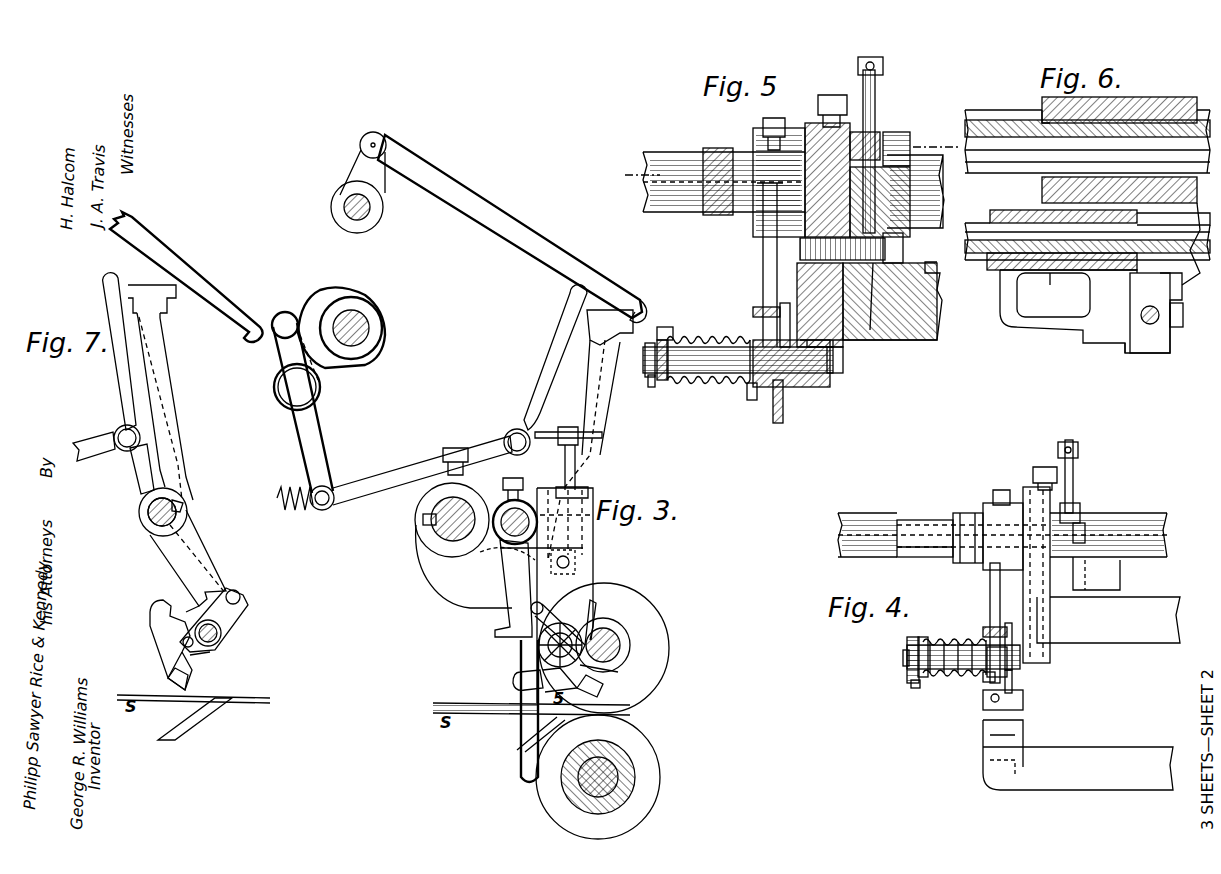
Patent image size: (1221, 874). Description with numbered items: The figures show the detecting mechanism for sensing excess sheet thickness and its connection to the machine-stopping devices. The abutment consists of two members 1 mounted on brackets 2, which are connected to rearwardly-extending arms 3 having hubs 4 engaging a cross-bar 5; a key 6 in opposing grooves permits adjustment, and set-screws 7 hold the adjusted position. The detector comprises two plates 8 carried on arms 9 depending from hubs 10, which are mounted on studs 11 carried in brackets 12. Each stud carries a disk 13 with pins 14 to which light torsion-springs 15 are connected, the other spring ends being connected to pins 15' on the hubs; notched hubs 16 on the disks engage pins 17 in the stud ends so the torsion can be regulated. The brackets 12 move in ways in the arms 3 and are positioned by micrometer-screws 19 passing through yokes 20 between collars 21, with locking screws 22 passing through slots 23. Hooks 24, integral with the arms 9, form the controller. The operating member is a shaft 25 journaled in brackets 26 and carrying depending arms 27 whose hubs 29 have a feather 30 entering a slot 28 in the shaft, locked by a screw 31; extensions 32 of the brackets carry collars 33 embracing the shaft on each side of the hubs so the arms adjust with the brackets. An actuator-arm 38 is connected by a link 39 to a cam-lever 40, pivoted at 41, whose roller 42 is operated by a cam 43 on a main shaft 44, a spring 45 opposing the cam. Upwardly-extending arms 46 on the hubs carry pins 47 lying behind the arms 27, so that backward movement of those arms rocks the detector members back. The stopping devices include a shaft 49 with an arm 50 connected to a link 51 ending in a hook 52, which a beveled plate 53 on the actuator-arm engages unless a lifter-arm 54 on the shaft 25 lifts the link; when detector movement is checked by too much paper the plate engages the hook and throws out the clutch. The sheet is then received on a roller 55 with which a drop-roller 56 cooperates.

In FIG. 7, the abutment members 1 is at (190, 726).
In FIG. 3, the abutment members 1 is at (520, 728).
In FIG. 4, the abutment members 1 is at (1023, 734).
In FIG. 3, the brackets 2 is at (518, 770).
In FIG. 5, the brackets 2 is at (930, 342).
In FIG. 6, the brackets 2 is at (1163, 344).
In FIG. 4, the brackets 2 is at (1081, 693).
In FIG. 3, the rearwardly-extending arms 3 is at (440, 585).
In FIG. 6, the rearwardly-extending arms 3 is at (1200, 268).
In FIG. 3, the hubs 4 is at (420, 502).
In FIG. 5, the hubs 4 is at (895, 140).
In FIG. 6, the hubs 4 is at (1173, 100).
In FIG. 4, the hubs 4 is at (985, 576).
In FIG. 3, the cross-bar 5 is at (407, 555).
In FIG. 5, the cross-bar 5 is at (793, 190).
In FIG. 6, the cross-bar 5 is at (1087, 141).
In FIG. 4, the cross-bar 5 is at (860, 516).
In FIG. 3, the key 6 is at (423, 519).
In FIG. 5, the key 6 is at (781, 156).
In FIG. 6, the key 6 is at (1042, 112).
In FIG. 3, the set-screws 7 is at (460, 440).
In FIG. 5, the set-screws 7 is at (832, 99).
In FIG. 4, the set-screws 7 is at (1038, 472).
In FIG. 7, the detector plates 8 is at (188, 683).
In FIG. 3, the detector plates 8 is at (603, 688).
In FIG. 4, the detector plates 8 is at (1023, 702).
In FIG. 7, the arms 9 is at (170, 660).
In FIG. 3, the arms 9 is at (560, 678).
In FIG. 5, the arms 9 is at (784, 412).
In FIG. 4, the arms 9 is at (1013, 683).
In FIG. 5, the hubs 10 is at (790, 385).
In FIG. 4, the hubs 10 is at (998, 661).
In FIG. 3, the studs 11 is at (540, 649).
In FIG. 5, the studs 11 is at (648, 356).
In FIG. 4, the studs 11 is at (907, 656).
In FIG. 5, the brackets 12 is at (803, 278).
In FIG. 6, the brackets 12 is at (1135, 313).
In FIG. 3, the disks 13 is at (620, 665).
In FIG. 5, the disks 13 is at (662, 382).
In FIG. 4, the disks 13 is at (915, 683).
In FIG. 5, the pins 14 is at (672, 330).
In FIG. 4, the pins 14 is at (925, 640).
In FIG. 7, the torsion-springs 15 is at (225, 650).
In FIG. 5, the torsion-springs 15 is at (708, 351).
In FIG. 4, the torsion-springs 15 is at (954, 665).
In FIG. 7, the pins 15' is at (160, 640).
In FIG. 5, the pins 15' is at (736, 393).
In FIG. 4, the pins 15' is at (972, 692).
In FIG. 3, the notched hubs 16 is at (605, 635).
In FIG. 5, the notched hubs 16 is at (645, 370).
In FIG. 4, the notched hubs 16 is at (905, 670).
In FIG. 3, the pins 17 is at (597, 615).
In FIG. 5, the pins 17 is at (650, 380).
In FIG. 4, the pins 17 is at (912, 642).
In FIG. 3, the micrometer-screws 19 is at (577, 470).
In FIG. 5, the micrometer-screws 19 is at (878, 90).
In FIG. 6, the micrometer-screws 19 is at (1175, 305).
In FIG. 4, the micrometer-screws 19 is at (1085, 512).
In FIG. 5, the yokes 20 is at (892, 132).
In FIG. 4, the yokes 20 is at (1080, 506).
In FIG. 5, the collars 21 is at (866, 130).
In FIG. 4, the collars 21 is at (1076, 500).
In FIG. 3, the locking screws 22 is at (570, 560).
In FIG. 5, the locking screws 22 is at (903, 244).
In FIG. 6, the locking screws 22 is at (1172, 317).
In FIG. 4, the locking screws 22 is at (1082, 578).
In FIG. 3, the slots 23 is at (575, 568).
In FIG. 5, the slots 23 is at (873, 330).
In FIG. 4, the slots 23 is at (1078, 588).
In FIG. 7, the hooks 24 is at (156, 602).
In FIG. 3, the hooks 24 is at (514, 675).
In FIG. 7, the shaft 25 is at (160, 516).
In FIG. 3, the shaft 25 is at (508, 537).
In FIG. 6, the shaft 25 is at (1087, 241).
In FIG. 4, the shaft 25 is at (940, 547).
In FIG. 3, the brackets 26 is at (497, 482).
In FIG. 7, the depending arms 27 is at (212, 568).
In FIG. 3, the depending arms 27 is at (512, 592).
In FIG. 5, the depending arms 27 is at (762, 250).
In FIG. 4, the depending arms 27 is at (990, 596).
In FIG. 6, the slot 28 is at (990, 258).
In FIG. 4, the slot 28 is at (918, 522).
In FIG. 3, the hubs 29 is at (520, 502).
In FIG. 6, the hubs 29 is at (1047, 275).
In FIG. 7, the feather 30 is at (182, 507).
In FIG. 3, the feather 30 is at (529, 521).
In FIG. 6, the feather 30 is at (1052, 278).
In FIG. 5, the screw 31 is at (785, 110).
In FIG. 4, the screw 31 is at (1010, 488).
In FIG. 3, the extensions 32 is at (580, 530).
In FIG. 6, the extensions 32 is at (1050, 332).
In FIG. 4, the extensions 32 is at (968, 513).
In FIG. 5, the collars 33 is at (718, 150).
In FIG. 6, the collars 33 is at (1010, 210).
In FIG. 7, the actuator-arm 38 is at (168, 356).
In FIG. 3, the actuator-arm 38 is at (589, 410).
In FIG. 7, the link 39 is at (100, 443).
In FIG. 3, the link 39 is at (424, 463).
In FIG. 3, the cam-lever 40 is at (303, 408).
In FIG. 3, the pivot 41 is at (297, 387).
In FIG. 3, the roller 42 is at (287, 312).
In FIG. 3, the cam 43 is at (330, 292).
In FIG. 3, the shaft 44 is at (366, 320).
In FIG. 3, the spring 45 is at (275, 500).
In FIG. 7, the upwardly-extending arms 46 is at (220, 622).
In FIG. 3, the upwardly-extending arms 46 is at (560, 626).
In FIG. 5, the upwardly-extending arms 46 is at (785, 305).
In FIG. 4, the upwardly-extending arms 46 is at (1012, 628).
In FIG. 7, the pins 47 is at (240, 597).
In FIG. 3, the pins 47 is at (548, 599).
In FIG. 5, the pins 47 is at (758, 308).
In FIG. 4, the pins 47 is at (988, 628).
In FIG. 3, the shaft 49 is at (344, 208).
In FIG. 3, the arm 50 is at (352, 165).
In FIG. 7, the link 51 is at (198, 275).
In FIG. 3, the link 51 is at (533, 243).
In FIG. 3, the hook 52 is at (640, 303).
In FIG. 7, the beveled plate 53 is at (160, 290).
In FIG. 3, the beveled plate 53 is at (636, 320).
In FIG. 7, the lifter-arm 54 is at (110, 318).
In FIG. 3, the lifter-arm 54 is at (555, 350).
In FIG. 3, the roller 55 is at (660, 778).
In FIG. 3, the drop-roller 56 is at (663, 633).